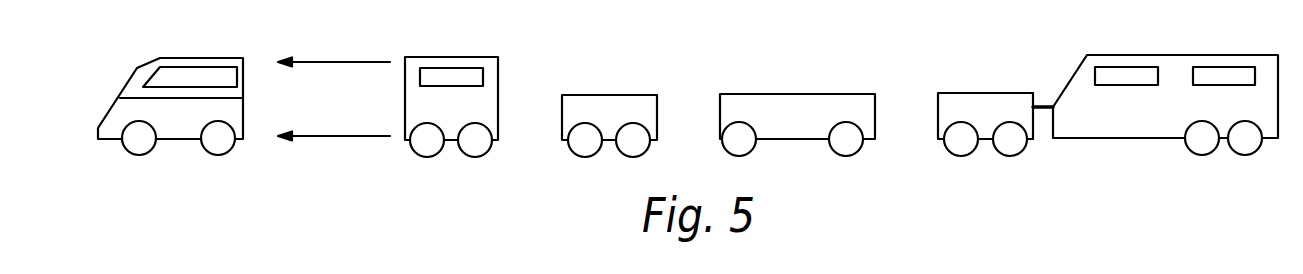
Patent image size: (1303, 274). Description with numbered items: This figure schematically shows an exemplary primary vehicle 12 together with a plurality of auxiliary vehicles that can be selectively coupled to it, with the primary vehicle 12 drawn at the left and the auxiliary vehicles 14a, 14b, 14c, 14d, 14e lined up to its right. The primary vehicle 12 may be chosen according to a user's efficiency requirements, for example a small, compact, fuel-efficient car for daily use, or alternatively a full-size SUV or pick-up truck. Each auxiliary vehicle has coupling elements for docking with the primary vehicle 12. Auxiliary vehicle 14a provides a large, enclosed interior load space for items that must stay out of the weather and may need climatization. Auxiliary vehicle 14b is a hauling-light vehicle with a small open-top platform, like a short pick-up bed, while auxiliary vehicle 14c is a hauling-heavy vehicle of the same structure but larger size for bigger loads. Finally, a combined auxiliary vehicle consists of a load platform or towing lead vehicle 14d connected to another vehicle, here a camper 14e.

The primary vehicle 12 is at (190, 57).
The auxiliary vehicle 14a is at (463, 57).
The auxiliary vehicle 14b is at (605, 94).
The auxiliary vehicle 14c is at (783, 93).
The towing lead vehicle 14d is at (963, 93).
The camper 14e is at (1182, 55).